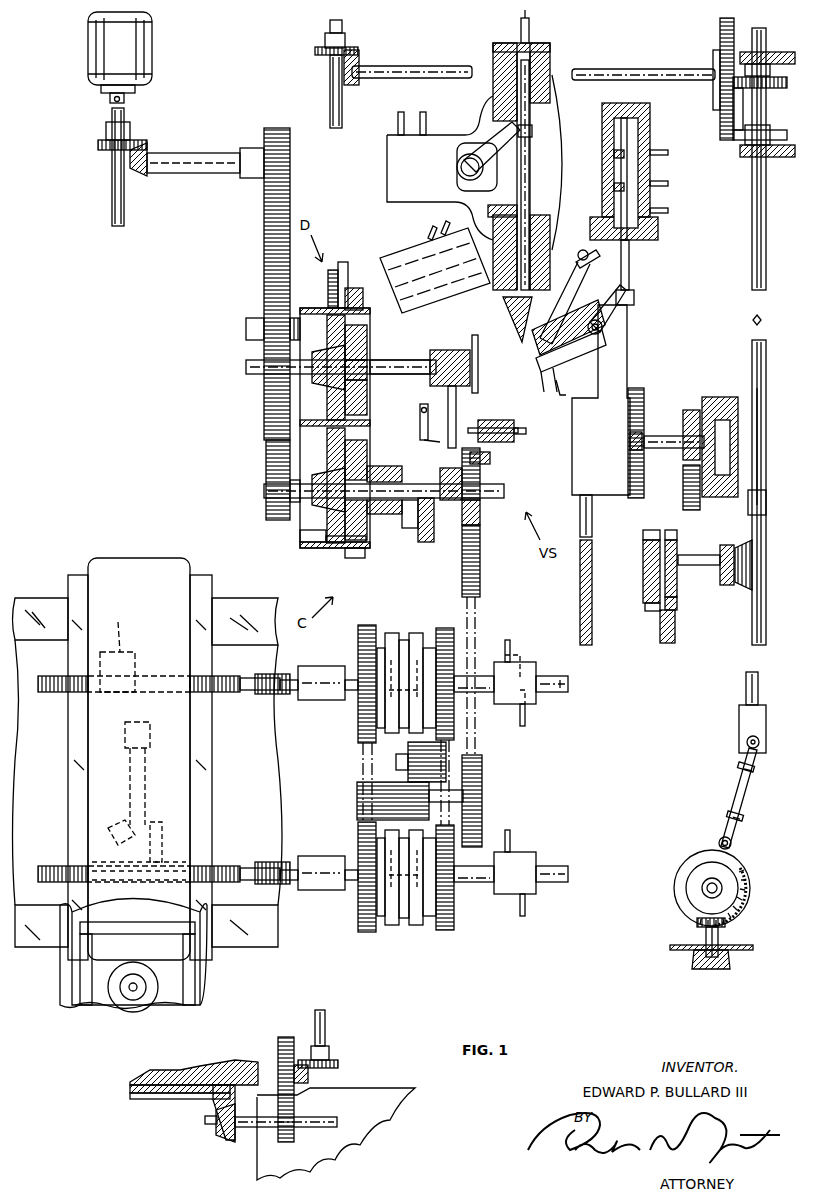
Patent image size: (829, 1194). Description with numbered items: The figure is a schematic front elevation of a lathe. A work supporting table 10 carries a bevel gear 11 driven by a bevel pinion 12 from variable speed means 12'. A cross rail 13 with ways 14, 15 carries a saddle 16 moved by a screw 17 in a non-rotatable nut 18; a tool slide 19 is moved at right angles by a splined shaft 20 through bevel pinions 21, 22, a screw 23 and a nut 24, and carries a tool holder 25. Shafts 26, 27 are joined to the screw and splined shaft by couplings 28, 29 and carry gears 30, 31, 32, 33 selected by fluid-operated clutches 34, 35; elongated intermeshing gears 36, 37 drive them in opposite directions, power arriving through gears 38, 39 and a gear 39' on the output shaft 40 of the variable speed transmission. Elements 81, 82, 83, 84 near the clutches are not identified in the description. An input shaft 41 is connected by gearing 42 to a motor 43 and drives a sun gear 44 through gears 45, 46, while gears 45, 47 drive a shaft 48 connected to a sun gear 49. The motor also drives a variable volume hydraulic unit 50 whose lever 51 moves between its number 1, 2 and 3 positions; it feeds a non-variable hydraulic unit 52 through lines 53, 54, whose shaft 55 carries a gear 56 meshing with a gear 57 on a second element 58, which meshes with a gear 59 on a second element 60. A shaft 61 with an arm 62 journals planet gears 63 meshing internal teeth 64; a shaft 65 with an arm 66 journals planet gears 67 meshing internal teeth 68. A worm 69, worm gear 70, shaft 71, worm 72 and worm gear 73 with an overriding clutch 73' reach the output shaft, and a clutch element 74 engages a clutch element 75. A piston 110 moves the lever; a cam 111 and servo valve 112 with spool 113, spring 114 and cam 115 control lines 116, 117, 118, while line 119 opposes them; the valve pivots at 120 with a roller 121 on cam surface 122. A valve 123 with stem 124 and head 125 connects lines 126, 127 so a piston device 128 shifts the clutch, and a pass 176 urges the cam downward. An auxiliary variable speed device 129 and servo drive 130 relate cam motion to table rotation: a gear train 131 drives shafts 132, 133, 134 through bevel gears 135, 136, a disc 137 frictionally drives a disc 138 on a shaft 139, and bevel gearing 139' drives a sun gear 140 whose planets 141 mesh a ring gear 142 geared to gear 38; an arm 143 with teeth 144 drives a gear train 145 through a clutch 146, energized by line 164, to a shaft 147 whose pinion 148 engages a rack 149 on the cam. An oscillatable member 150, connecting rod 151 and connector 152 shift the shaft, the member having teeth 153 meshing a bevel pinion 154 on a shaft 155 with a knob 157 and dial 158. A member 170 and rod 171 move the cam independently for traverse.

The number one position 1 is at (532, 131).
The number two position 2 is at (531, 166).
The number three position 3 is at (520, 172).
The work supporting table 10 is at (193, 1068).
The bevel gear 11 is at (226, 1102).
The bevel pinion 12 is at (265, 1136).
The variable speed means 12' is at (336, 1121).
The cross rail 13 is at (244, 752).
The way 14 is at (260, 602).
The way 15 is at (248, 948).
The saddle 16 is at (200, 792).
The screw 17 is at (256, 692).
The non-rotatable nut 18 is at (118, 630).
The tool slide 19 is at (124, 902).
The splined shaft 20 is at (256, 866).
The bevel pinion 21 is at (170, 850).
The bevel pinion 22 is at (115, 838).
The rotatable screw 23 is at (130, 790).
The nut 24 is at (150, 735).
The tool holder 25 is at (60, 984).
The shaft 26 is at (350, 696).
The shaft 27 is at (348, 886).
The coupling 28 is at (322, 668).
The coupling 29 is at (322, 856).
The gear 30 is at (368, 625).
The gear 31 is at (446, 628).
The gear 32 is at (366, 932).
The gear 33 is at (446, 930).
The fluid-operated clutch 34 is at (407, 614).
The fluid-operated clutch 35 is at (398, 967).
The elongated gear 36 is at (410, 748).
The elongated gear 37 is at (362, 794).
The gear 38 is at (480, 762).
The gear 39 is at (487, 640).
The gear 39' is at (489, 509).
The output shaft 40 is at (480, 478).
The input shaft 41 is at (250, 320).
The gearing 42 is at (143, 138).
The motor 43 is at (140, 45).
The sun gear 44 is at (326, 372).
The gear 45 is at (264, 275).
The gear 46 is at (258, 364).
The gear 47 is at (270, 510).
The shaft 48 is at (294, 502).
The sun gear 49 is at (326, 508).
The variable volume hydraulic unit 50 is at (432, 180).
The lever 51 is at (490, 145).
The non-variable hydraulic unit 52 is at (416, 292).
The line 53 is at (398, 113).
The line 54 is at (424, 113).
The shaft 55 is at (366, 268).
The gear 56 is at (348, 266).
The gear 57 is at (350, 292).
The second element 58 is at (304, 310).
The gear 59 is at (360, 556).
The second element 60 is at (338, 544).
The shaft 61 is at (415, 360).
The arm 62 is at (367, 350).
The planet gear 63 is at (345, 340).
The internal gear teeth 64 is at (338, 316).
The shaft 65 is at (372, 482).
The arm 66 is at (367, 512).
The planet gear 67 is at (334, 460).
The internal gear teeth 68 is at (310, 542).
The worm 69 is at (447, 350).
The worm gear 70 is at (476, 352).
The shaft 71 is at (458, 398).
The worm 72 is at (420, 432).
The worm gear 73 is at (439, 519).
The overriding clutch 73' is at (490, 457).
The clutch element 74 is at (426, 528).
The clutch element 75 is at (408, 528).
The clutch shifter 81 is at (510, 852).
The shifter pin 82 is at (525, 915).
The clutch shifter 83 is at (512, 660).
The shifter pin 84 is at (525, 720).
The reciprocable piston 110 is at (540, 80).
The reciprocable cam 111 is at (609, 482).
The servo valve 112 is at (560, 320).
The spool 113 is at (536, 350).
The spring 114 is at (590, 338).
The cam 115 is at (510, 310).
The constant pressure line 116 is at (538, 382).
The exhaust line 117 is at (556, 380).
The line 118 is at (529, 26).
The constant pressure line 119 is at (548, 280).
The pivot 120 is at (585, 266).
The cam roller 121 is at (602, 326).
The cam surface 122 is at (610, 332).
The valve 123 is at (688, 124).
The valve stem 124 is at (614, 188).
The head 125 is at (614, 162).
The line 126 is at (668, 153).
The line 127 is at (518, 434).
The piston device 128 is at (512, 416).
The auxiliary variable speed device 129 is at (737, 160).
The servo drive 130 is at (636, 572).
The gear train 131 is at (275, 1052).
The shaft 132 is at (326, 1025).
The shaft 133 is at (330, 92).
The shaft 134 is at (452, 68).
The bevel gear 135 is at (322, 46).
The bevel gear 136 is at (358, 62).
The flat disc 137 is at (720, 36).
The disc 138 is at (784, 88).
The reciprocable shaft 139 is at (771, 159).
The bevel gearing 139' is at (772, 480).
The sun gear 140 is at (680, 556).
The planet gear 141 is at (678, 525).
The ring gear 142 is at (677, 602).
The arm 143 is at (643, 552).
The gear teeth 144 is at (650, 608).
The gear train 145 is at (698, 420).
The hydraulically operable clutch 146 is at (710, 405).
The shaft 147 is at (652, 440).
The pinion 148 is at (630, 441).
The rack 149 is at (640, 398).
The oscillatable member 150 is at (742, 862).
The connecting rod 151 is at (736, 794).
The non-rotatable connector 152 is at (745, 721).
The bevel gear teeth 153 is at (750, 888).
The bevel pinion 154 is at (697, 924).
The shaft 155 is at (718, 938).
The knob 157 is at (696, 968).
The dial 158 is at (670, 948).
The line 164 is at (760, 500).
The member 170 is at (580, 506).
The rod 171 is at (580, 620).
The pass 176 is at (650, 128).